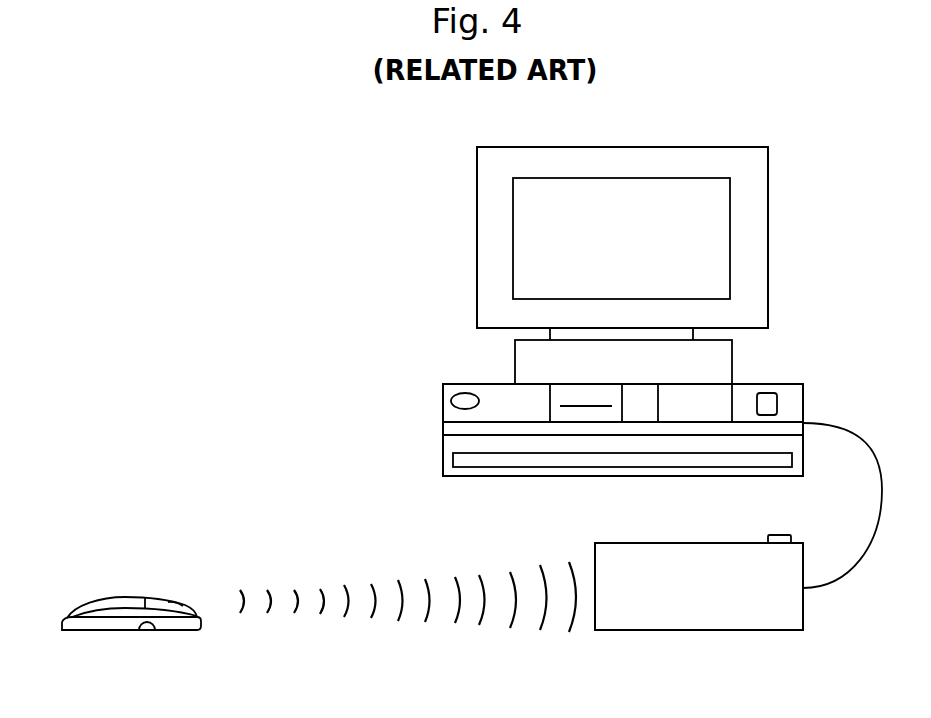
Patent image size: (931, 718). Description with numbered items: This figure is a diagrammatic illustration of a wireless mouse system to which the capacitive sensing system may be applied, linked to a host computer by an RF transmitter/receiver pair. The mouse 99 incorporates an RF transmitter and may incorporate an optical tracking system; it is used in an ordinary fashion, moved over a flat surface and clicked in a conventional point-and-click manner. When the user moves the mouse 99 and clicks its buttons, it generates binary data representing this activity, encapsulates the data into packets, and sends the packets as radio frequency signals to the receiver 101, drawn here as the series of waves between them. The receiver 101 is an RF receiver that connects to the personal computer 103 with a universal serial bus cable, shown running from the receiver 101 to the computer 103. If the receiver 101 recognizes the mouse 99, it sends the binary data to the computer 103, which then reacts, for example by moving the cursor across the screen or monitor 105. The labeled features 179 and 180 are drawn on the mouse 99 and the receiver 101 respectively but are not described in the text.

The mouse 99 is at (128, 598).
The receiver 101 is at (676, 618).
The personal computer 103 is at (771, 384).
The screen (monitor) 105 is at (640, 252).
The transmitter of mouse 179 is at (146, 632).
The connector of receiver 180 is at (768, 536).